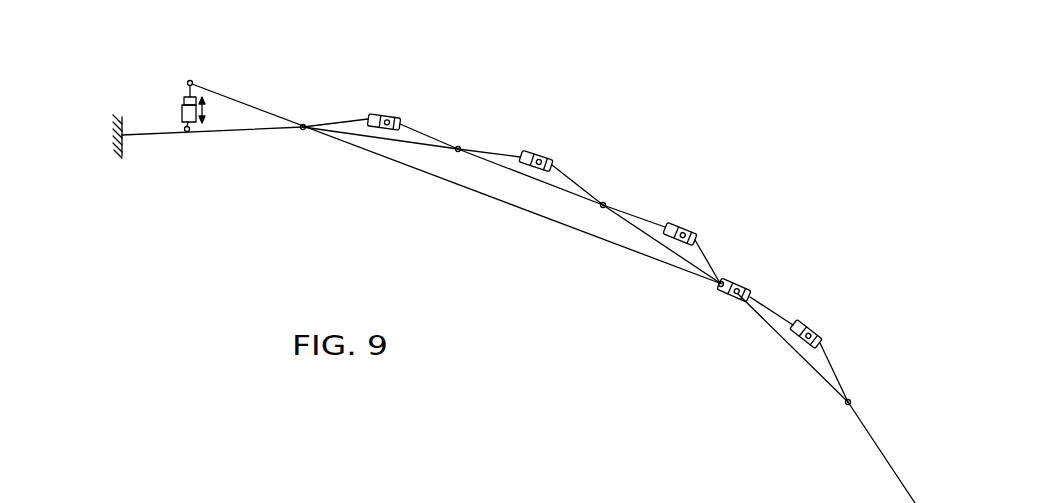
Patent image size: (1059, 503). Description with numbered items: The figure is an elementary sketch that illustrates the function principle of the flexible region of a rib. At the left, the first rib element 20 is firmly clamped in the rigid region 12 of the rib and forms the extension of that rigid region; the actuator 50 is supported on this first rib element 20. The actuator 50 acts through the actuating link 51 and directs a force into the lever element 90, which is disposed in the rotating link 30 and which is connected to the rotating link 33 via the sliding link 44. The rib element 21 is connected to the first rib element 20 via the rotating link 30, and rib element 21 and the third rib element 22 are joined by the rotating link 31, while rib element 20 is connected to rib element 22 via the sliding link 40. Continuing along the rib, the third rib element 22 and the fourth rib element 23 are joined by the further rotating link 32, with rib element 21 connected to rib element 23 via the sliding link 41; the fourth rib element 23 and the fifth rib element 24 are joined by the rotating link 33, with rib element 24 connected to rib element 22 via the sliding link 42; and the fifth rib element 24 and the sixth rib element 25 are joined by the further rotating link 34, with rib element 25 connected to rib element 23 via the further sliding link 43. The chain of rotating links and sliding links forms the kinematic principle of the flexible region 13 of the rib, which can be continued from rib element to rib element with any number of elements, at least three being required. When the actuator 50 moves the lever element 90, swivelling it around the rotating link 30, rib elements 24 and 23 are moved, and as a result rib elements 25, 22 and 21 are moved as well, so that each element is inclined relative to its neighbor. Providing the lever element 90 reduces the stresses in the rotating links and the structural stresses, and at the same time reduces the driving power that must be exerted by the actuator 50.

The rigid region 12 is at (103, 148).
The manipulator arm 13 is at (786, 169).
The first rib element 20 is at (220, 136).
The rib element 21 is at (387, 141).
The third rib element 22 is at (428, 143).
The fourth rib element 23 is at (572, 180).
The fifth rib element 24 is at (710, 255).
The sixth rib element 25 is at (832, 370).
The rotating link 30 is at (302, 131).
The rotating link 31 is at (460, 147).
The rotating link 32 is at (608, 205).
The rotating link 33 is at (728, 295).
The rotating link 34 is at (848, 405).
The sliding link 40 is at (387, 116).
The sliding link 41 is at (541, 150).
The sliding link 42 is at (687, 225).
The sliding link 43 is at (821, 334).
The sliding link 44 is at (745, 285).
The actuator 50 is at (181, 108).
The actuating link 51 is at (191, 80).
The lever element 90 is at (407, 168).